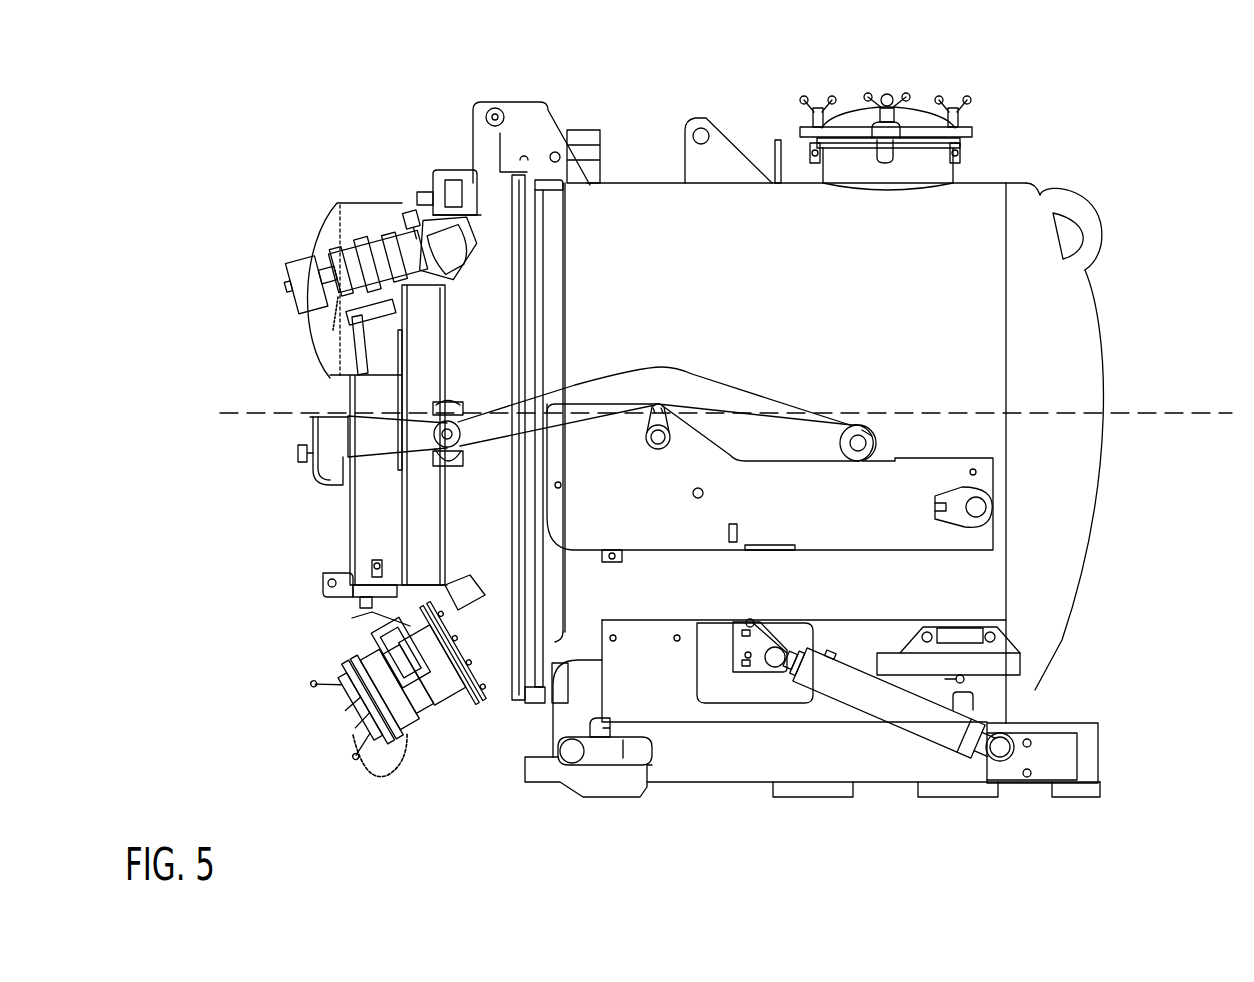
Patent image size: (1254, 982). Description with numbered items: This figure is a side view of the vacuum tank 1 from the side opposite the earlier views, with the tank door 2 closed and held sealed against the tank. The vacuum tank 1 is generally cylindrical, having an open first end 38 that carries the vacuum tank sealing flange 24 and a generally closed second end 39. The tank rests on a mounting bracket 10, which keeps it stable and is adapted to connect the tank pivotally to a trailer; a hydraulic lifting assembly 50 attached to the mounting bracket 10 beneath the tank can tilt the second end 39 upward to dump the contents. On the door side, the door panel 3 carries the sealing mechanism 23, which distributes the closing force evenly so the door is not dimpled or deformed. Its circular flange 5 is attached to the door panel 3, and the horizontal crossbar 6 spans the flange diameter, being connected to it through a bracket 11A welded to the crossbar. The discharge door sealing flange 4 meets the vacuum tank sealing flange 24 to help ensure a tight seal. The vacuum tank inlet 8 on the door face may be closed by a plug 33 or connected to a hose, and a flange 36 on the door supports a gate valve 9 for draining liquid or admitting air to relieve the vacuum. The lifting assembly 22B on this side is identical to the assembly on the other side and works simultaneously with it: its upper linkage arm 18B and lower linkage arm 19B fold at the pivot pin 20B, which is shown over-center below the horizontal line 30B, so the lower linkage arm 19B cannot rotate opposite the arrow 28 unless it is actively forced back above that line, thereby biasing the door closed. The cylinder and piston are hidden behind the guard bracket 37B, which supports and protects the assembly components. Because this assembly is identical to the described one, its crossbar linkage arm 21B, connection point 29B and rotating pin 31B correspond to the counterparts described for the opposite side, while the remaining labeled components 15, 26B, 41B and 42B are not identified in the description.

The vacuum tank 1 is at (965, 218).
The tank door 2 is at (305, 602).
The door panel 3 is at (467, 577).
The discharge door sealing flange 4 is at (515, 203).
The circular flange 5 is at (423, 520).
The horizontal crossbar 6 is at (323, 432).
The vacuum tank inlet 8 is at (402, 253).
The gate valve 9 is at (427, 710).
The mounting bracket 10 is at (745, 760).
The bracket 11A is at (400, 463).
The hinge bracket 15 is at (533, 118).
The upper linkage arm 18B is at (603, 392).
The lower linkage arm 19B is at (787, 443).
The pivot pin 20B is at (858, 443).
The clamp jaw 21B is at (368, 437).
The lifting assembly 22B is at (868, 388).
The sealing mechanism 23 is at (283, 483).
The vacuum tank sealing flange 24 is at (530, 232).
The cam 26B is at (978, 507).
The arrow 28 is at (680, 322).
The lever arm 29B is at (350, 414).
The horizontal line 30B is at (1128, 420).
The hook 31B is at (656, 445).
The plug 33 is at (300, 268).
The flange 36 is at (478, 712).
The guard bracket 37B is at (822, 530).
The first end 38 is at (517, 205).
The second end 39 is at (1008, 238).
The stop 41B is at (866, 428).
The pivot pin 42B is at (446, 433).
The hydraulic lifting assembly 50 is at (1063, 697).